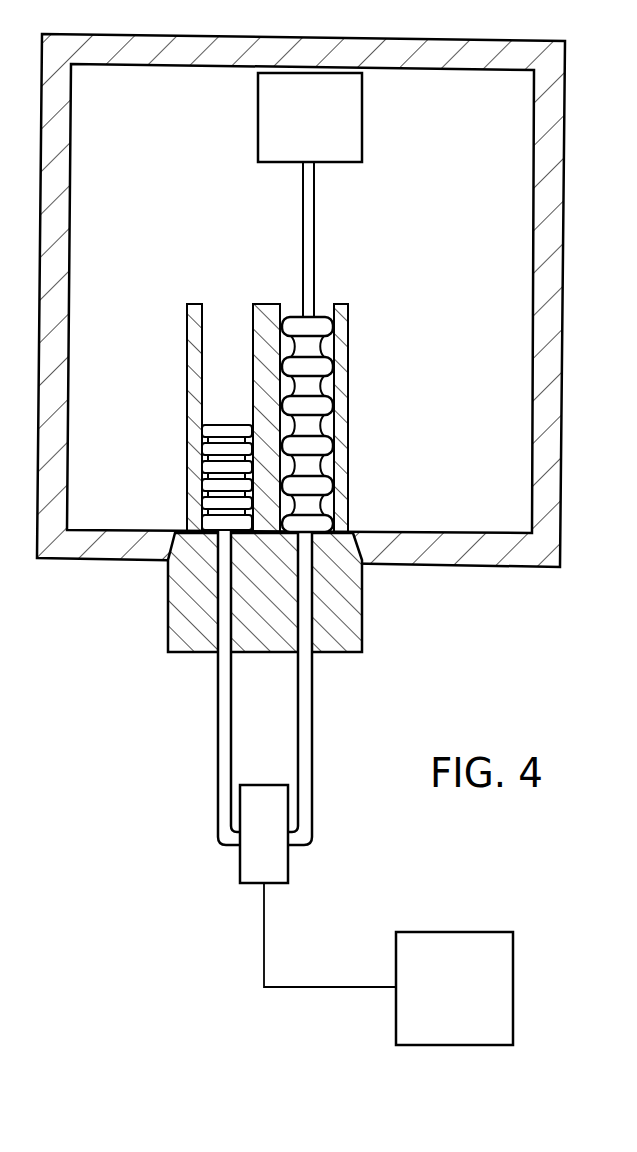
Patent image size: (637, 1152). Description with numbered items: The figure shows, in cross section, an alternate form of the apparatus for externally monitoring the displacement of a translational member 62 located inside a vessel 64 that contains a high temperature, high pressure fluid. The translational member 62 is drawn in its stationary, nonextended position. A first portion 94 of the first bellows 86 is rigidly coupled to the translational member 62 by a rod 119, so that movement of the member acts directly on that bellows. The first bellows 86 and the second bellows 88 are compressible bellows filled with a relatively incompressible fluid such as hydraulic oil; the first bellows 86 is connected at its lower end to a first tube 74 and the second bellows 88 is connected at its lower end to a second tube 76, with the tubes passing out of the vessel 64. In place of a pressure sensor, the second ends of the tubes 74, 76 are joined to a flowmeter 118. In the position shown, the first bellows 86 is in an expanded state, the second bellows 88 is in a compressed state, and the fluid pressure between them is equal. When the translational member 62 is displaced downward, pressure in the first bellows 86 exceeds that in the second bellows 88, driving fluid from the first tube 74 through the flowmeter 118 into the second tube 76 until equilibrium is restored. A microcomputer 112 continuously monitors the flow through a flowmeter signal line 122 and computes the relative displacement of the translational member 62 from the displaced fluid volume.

The vessel 64 is at (396, 42).
The translational member 62 is at (352, 117).
The rod 119 is at (316, 228).
The first portion of the first bellows 94 is at (326, 315).
The first bellows 86 is at (329, 403).
The second bellows 88 is at (223, 425).
The first tube 74 is at (312, 733).
The second tube 76 is at (223, 797).
The flowmeter 118 is at (283, 872).
The flowmeter signal line 122 is at (263, 948).
The microcomputer 112 is at (472, 1002).